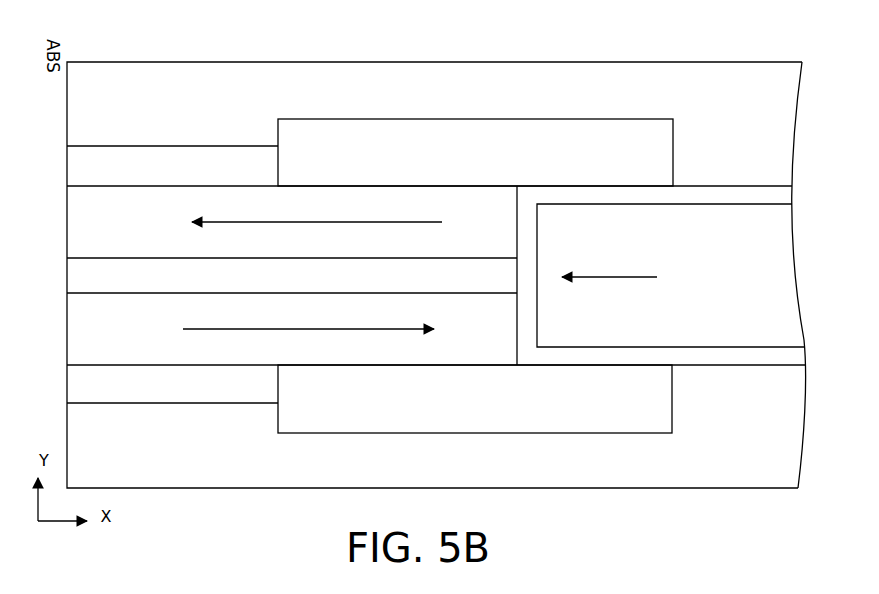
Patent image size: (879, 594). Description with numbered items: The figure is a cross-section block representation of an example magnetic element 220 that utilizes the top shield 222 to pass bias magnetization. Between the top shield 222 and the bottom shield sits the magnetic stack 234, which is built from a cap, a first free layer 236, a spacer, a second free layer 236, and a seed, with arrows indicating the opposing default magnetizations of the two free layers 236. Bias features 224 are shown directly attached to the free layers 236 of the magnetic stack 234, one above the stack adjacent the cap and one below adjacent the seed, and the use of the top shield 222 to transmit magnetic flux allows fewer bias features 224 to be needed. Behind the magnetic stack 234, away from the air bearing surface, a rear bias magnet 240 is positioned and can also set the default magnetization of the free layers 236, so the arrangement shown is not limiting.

The magnetic element 220 is at (738, 45).
The top shield 222 is at (429, 269).
The bias feature 224 is at (475, 276).
The magnetic stack 234 is at (57, 355).
The free layer 236 is at (260, 275).
The rear bias magnet 240 is at (670, 275).